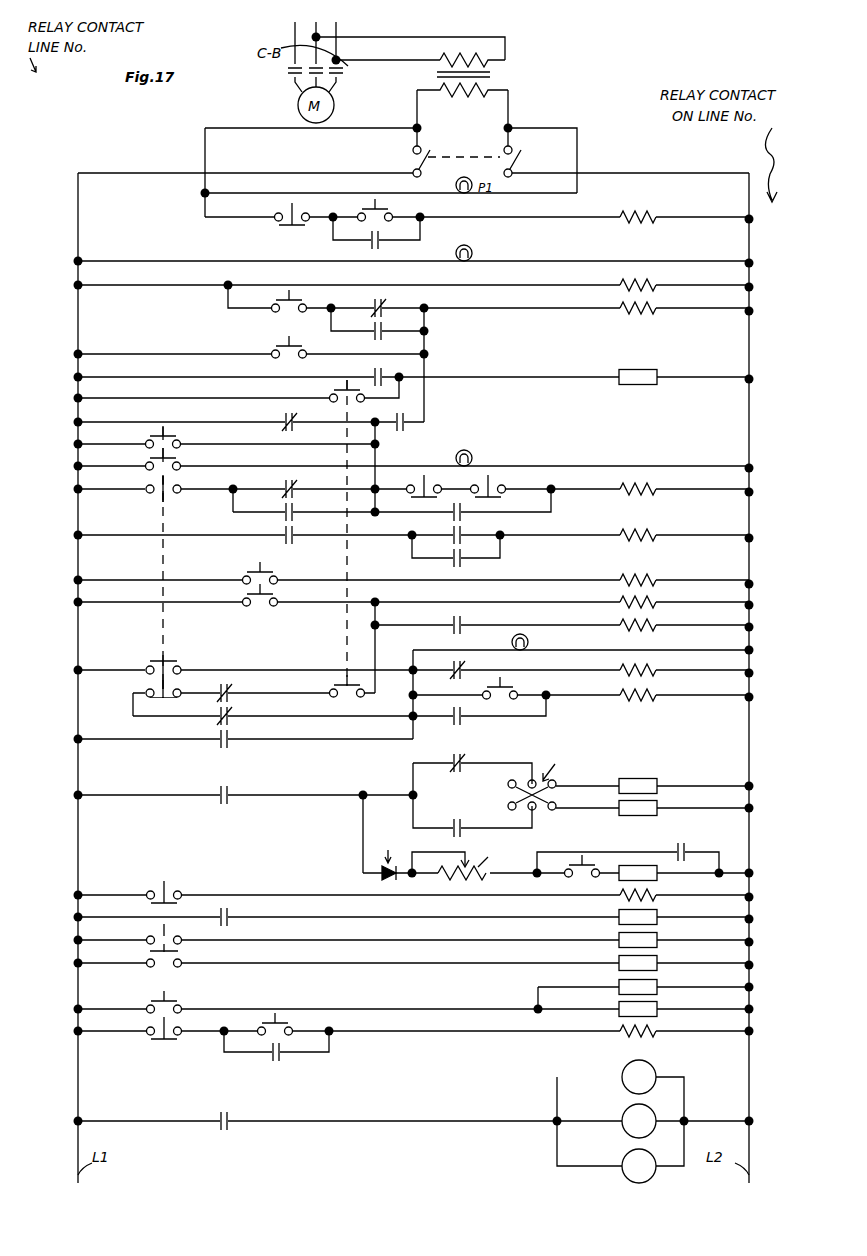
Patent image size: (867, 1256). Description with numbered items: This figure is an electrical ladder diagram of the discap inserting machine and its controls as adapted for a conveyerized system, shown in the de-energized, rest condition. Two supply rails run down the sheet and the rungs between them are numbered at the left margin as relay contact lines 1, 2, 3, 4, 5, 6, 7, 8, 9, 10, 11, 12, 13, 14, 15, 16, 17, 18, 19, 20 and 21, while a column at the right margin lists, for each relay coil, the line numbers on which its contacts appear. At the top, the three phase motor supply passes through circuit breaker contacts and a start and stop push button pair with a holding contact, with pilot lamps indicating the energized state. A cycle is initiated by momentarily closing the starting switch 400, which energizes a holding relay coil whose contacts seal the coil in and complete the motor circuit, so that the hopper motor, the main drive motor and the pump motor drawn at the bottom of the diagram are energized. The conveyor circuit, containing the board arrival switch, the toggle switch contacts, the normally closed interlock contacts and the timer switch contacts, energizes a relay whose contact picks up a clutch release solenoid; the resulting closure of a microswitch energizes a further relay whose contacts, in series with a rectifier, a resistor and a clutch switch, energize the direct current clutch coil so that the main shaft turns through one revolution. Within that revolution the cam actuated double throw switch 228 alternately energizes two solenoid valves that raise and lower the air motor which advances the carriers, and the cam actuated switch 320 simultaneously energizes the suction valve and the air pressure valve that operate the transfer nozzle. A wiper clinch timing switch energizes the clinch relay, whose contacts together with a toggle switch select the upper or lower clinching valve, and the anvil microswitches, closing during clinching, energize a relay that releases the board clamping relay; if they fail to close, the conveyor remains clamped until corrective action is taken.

The relay contact line 1 is at (68, 71).
The relay contact line 2 is at (68, 237).
The relay contact line 3 is at (68, 305).
The relay contact line 4 is at (68, 330).
The relay contact line 5 is at (68, 377).
The relay contact line 6 is at (68, 421).
The relay contact line 7 is at (68, 489).
The relay contact line 8 is at (68, 511).
The relay contact line 9 is at (68, 533).
The relay contact line 10 is at (68, 556).
The relay contact line 11 is at (68, 622).
The relay contact line 12 is at (68, 668).
The relay contact line 13 is at (68, 692).
The relay contact line 14 is at (68, 714).
The relay contact line 15 is at (68, 736).
The relay contact line 16 is at (68, 758).
The relay contact line 17 is at (68, 791).
The relay contact line 18 is at (68, 826).
The relay contact line 19 is at (68, 916).
The relay contact line 20 is at (68, 1051).
The relay contact line 21 is at (68, 1117).
The double throw switch 228 is at (182, 953).
The switch 320 is at (180, 994).
The starting switch 400 is at (287, 1025).